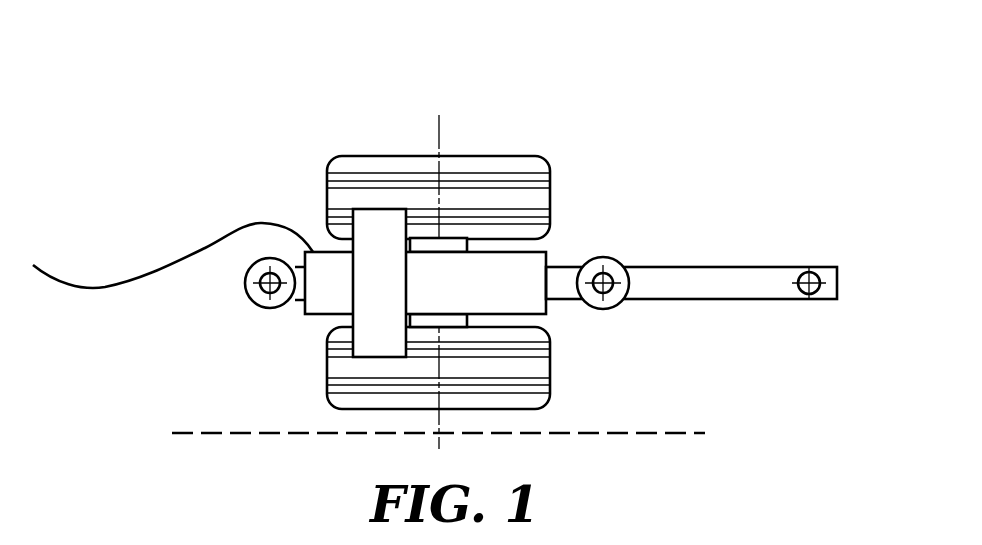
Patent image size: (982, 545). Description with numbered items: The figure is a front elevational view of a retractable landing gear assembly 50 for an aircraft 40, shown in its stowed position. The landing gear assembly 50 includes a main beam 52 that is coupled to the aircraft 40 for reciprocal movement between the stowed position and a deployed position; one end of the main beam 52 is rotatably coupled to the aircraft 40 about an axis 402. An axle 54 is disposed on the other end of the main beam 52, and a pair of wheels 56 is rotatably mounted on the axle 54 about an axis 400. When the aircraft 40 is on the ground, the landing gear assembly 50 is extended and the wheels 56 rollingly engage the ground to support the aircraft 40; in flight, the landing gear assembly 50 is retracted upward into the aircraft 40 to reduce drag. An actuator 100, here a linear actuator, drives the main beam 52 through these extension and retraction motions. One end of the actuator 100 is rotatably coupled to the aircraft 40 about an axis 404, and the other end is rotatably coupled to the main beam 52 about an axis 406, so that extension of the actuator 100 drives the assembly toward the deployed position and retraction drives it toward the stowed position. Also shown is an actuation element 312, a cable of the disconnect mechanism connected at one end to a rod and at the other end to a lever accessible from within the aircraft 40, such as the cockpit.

The landing gear assembly 50 is at (683, 128).
The actuation element 312 is at (83, 282).
The axis 400 is at (440, 130).
The wheels 56 is at (551, 193).
The axle 54 is at (467, 239).
The actuator 100 is at (379, 260).
The axis 404 is at (260, 298).
The main beam 52 is at (720, 267).
The axis 406 is at (609, 272).
The axis 402 is at (814, 272).
The aircraft 40 is at (610, 434).